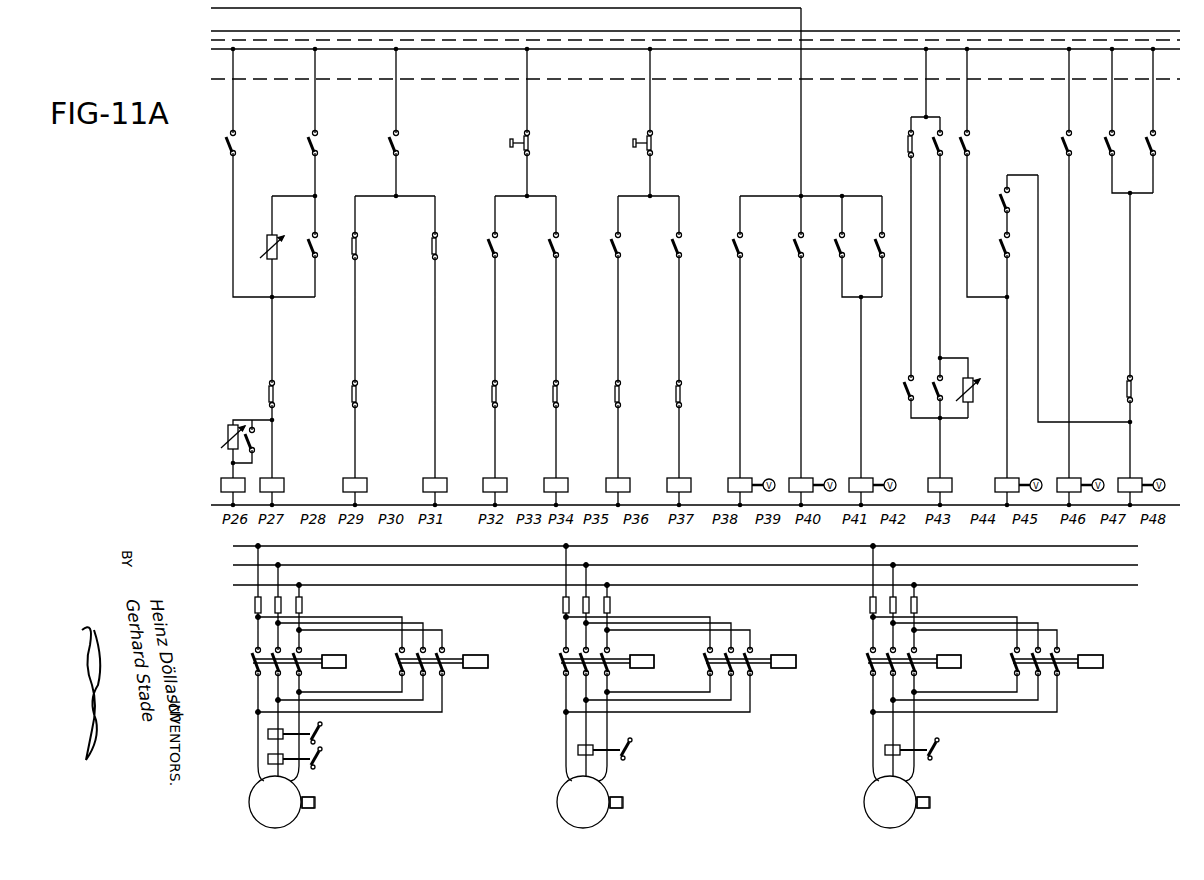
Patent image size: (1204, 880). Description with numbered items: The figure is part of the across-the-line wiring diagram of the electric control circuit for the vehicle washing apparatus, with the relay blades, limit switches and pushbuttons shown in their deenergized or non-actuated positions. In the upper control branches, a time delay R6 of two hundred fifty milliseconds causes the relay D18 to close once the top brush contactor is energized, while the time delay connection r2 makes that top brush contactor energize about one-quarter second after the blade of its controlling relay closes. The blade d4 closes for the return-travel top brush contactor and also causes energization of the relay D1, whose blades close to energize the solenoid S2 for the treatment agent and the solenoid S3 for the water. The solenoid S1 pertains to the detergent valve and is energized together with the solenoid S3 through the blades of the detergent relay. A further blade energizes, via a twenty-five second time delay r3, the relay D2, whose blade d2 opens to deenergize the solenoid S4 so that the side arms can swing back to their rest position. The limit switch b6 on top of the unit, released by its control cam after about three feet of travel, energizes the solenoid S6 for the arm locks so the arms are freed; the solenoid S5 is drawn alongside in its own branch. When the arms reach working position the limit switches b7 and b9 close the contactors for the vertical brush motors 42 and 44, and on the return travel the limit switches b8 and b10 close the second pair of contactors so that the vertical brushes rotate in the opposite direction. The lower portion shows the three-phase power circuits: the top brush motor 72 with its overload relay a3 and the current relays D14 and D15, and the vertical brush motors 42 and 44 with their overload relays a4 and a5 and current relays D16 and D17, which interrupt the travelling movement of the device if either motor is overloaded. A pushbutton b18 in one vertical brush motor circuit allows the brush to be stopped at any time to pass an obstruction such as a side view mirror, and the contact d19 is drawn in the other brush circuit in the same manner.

The motor 72 is at (292, 815).
The motor 42 is at (600, 815).
The motor 44 is at (907, 815).
The relay blade d4 is at (400, 142).
The pushbutton b18 is at (532, 140).
The relay blade d19 is at (655, 140).
The time delay connection r2 is at (266, 242).
The limit switch b7 is at (491, 253).
The limit switch b8 is at (552, 253).
The limit switch b9 is at (614, 253).
The limit switch b10 is at (675, 253).
The relay blade d2 is at (1000, 250).
The time delay r3 is at (976, 372).
The limit switch b6 is at (1134, 392).
The time delay R6 is at (226, 438).
The relay D18 is at (221, 486).
The relay D1 is at (441, 483).
The relay D2 is at (946, 483).
The solenoid S1 is at (743, 483).
The solenoid S2 is at (805, 483).
The solenoid S3 is at (866, 483).
The solenoid S4 is at (1012, 483).
The solenoid S5 is at (1072, 483).
The solenoid S6 is at (1134, 483).
The current relay D14 is at (268, 737).
The current relay D15 is at (268, 762).
The current relay D16 is at (578, 752).
The current relay D17 is at (885, 752).
The overload relay a3 is at (315, 800).
The overload relay a4 is at (623, 800).
The overload relay a5 is at (930, 800).